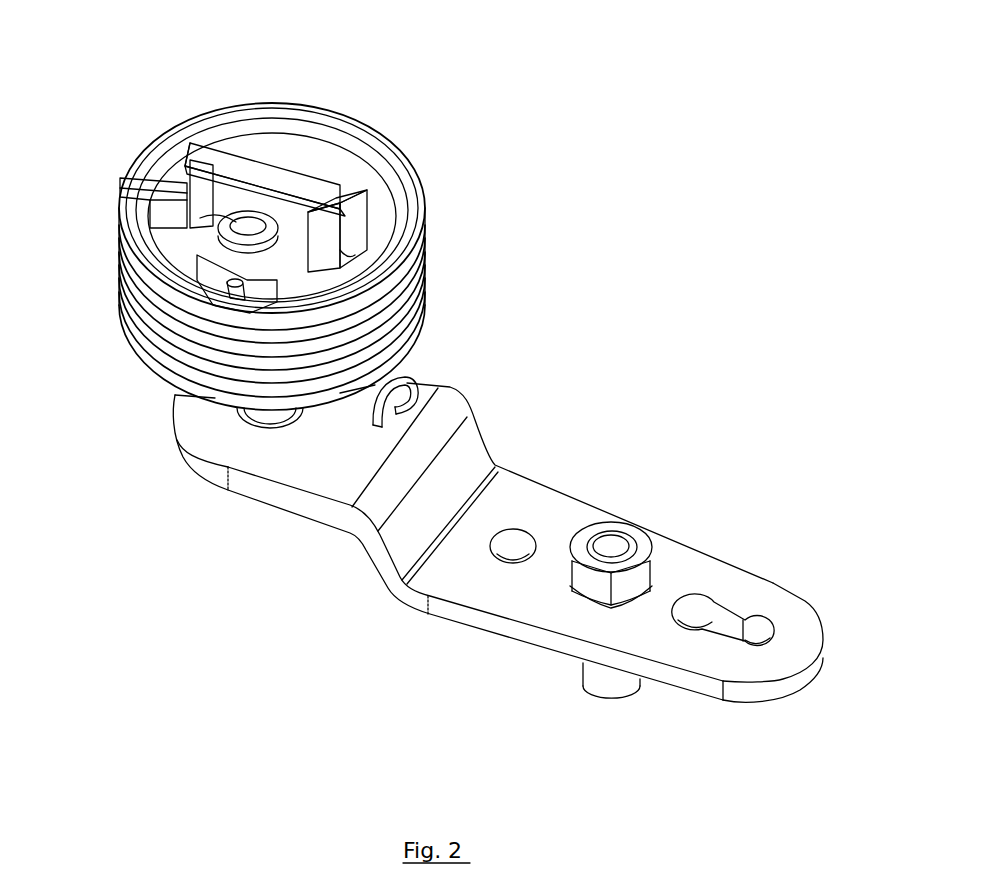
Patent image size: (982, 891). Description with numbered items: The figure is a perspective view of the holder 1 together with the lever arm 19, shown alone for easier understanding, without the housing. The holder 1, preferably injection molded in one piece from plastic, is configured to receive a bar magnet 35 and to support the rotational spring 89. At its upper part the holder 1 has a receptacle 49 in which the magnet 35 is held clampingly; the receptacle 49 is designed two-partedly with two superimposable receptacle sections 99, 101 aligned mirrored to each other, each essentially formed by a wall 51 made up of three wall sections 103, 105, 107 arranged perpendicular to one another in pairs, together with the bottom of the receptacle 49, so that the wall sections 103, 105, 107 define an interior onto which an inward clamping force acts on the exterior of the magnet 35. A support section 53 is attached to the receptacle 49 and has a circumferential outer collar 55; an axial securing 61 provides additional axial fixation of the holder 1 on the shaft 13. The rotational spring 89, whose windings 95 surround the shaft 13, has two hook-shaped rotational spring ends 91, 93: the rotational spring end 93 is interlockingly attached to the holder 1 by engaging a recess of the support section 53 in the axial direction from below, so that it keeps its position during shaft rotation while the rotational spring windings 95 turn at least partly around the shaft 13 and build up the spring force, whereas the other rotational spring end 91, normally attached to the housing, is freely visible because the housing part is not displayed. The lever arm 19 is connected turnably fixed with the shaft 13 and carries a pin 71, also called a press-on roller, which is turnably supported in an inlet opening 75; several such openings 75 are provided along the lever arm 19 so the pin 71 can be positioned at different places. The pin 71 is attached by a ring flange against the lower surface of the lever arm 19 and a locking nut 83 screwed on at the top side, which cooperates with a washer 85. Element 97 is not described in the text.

The holder 1 is at (187, 107).
The shaft 13 is at (245, 242).
The lever arm 19 is at (572, 457).
The bar magnet 35 is at (290, 178).
The receptacle 49 is at (378, 200).
The wall 51 is at (397, 210).
The support section 53 is at (167, 222).
The outer collar 55 is at (273, 140).
The axial securing 61 is at (225, 220).
The pin 71 is at (612, 690).
The inlet opening 75 is at (522, 533).
The locking nut 83 is at (590, 588).
The washer 85 is at (597, 610).
The rotational spring 89 is at (414, 348).
The rotational spring end 91 is at (440, 381).
The rotational spring end 93 is at (225, 283).
The rotational spring winding 95 is at (427, 313).
The tab 97 is at (255, 302).
The receptacle section 99 is at (167, 135).
The receptacle section 101 is at (375, 192).
The wall section 103 is at (152, 165).
The wall section 105 is at (182, 140).
The wall section 107 is at (224, 135).